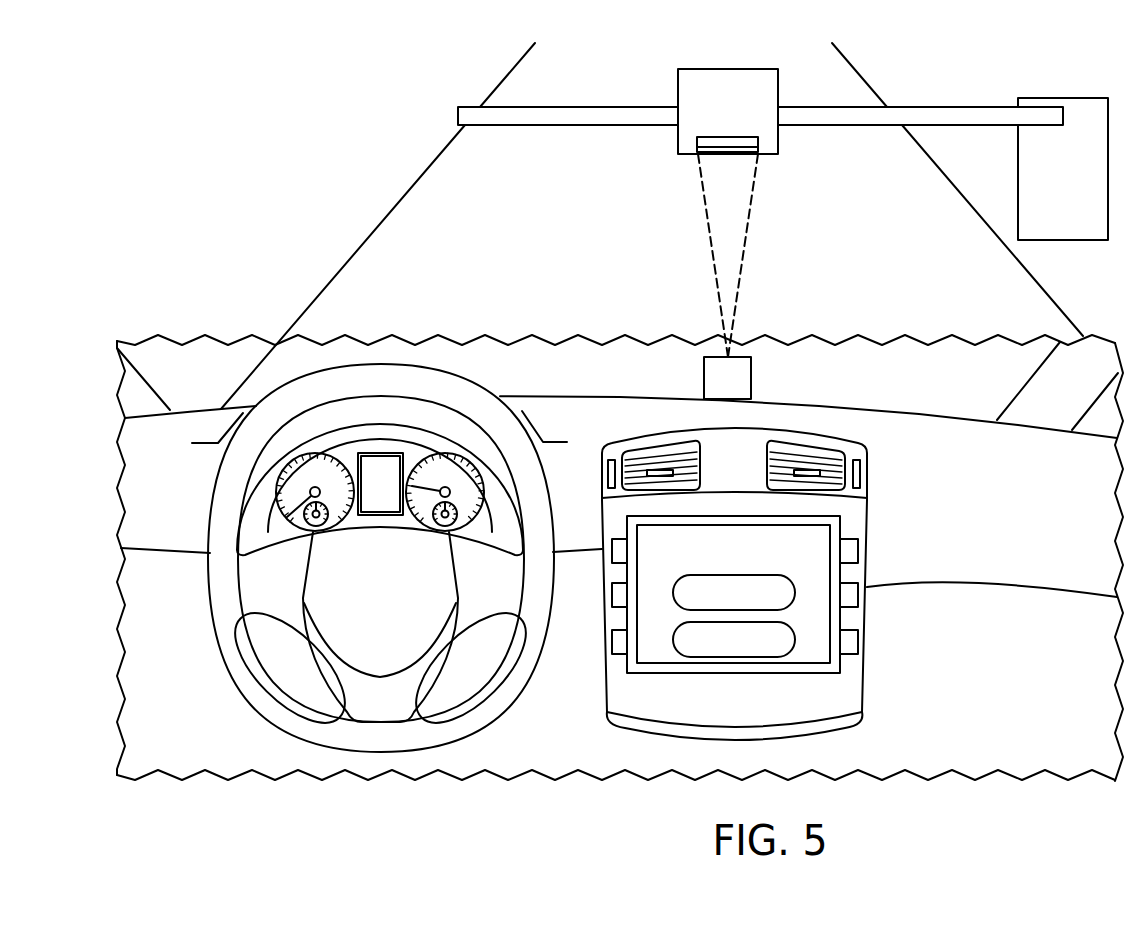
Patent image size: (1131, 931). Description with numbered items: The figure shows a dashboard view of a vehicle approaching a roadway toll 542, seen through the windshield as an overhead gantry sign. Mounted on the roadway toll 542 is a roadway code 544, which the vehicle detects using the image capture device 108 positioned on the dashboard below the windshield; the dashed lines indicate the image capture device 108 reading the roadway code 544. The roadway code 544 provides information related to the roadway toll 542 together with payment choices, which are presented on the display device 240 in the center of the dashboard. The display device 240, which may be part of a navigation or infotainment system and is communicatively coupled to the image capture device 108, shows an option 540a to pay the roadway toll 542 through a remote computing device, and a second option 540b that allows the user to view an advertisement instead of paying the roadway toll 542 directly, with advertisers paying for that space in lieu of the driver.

The roadway toll 542 is at (728, 69).
The roadway code 544 is at (758, 144).
The image capture device 108 is at (751, 391).
The option to pay the roadway toll 540a is at (795, 593).
The option to view an advertisement 540b is at (732, 663).
The display device 240 is at (777, 584).